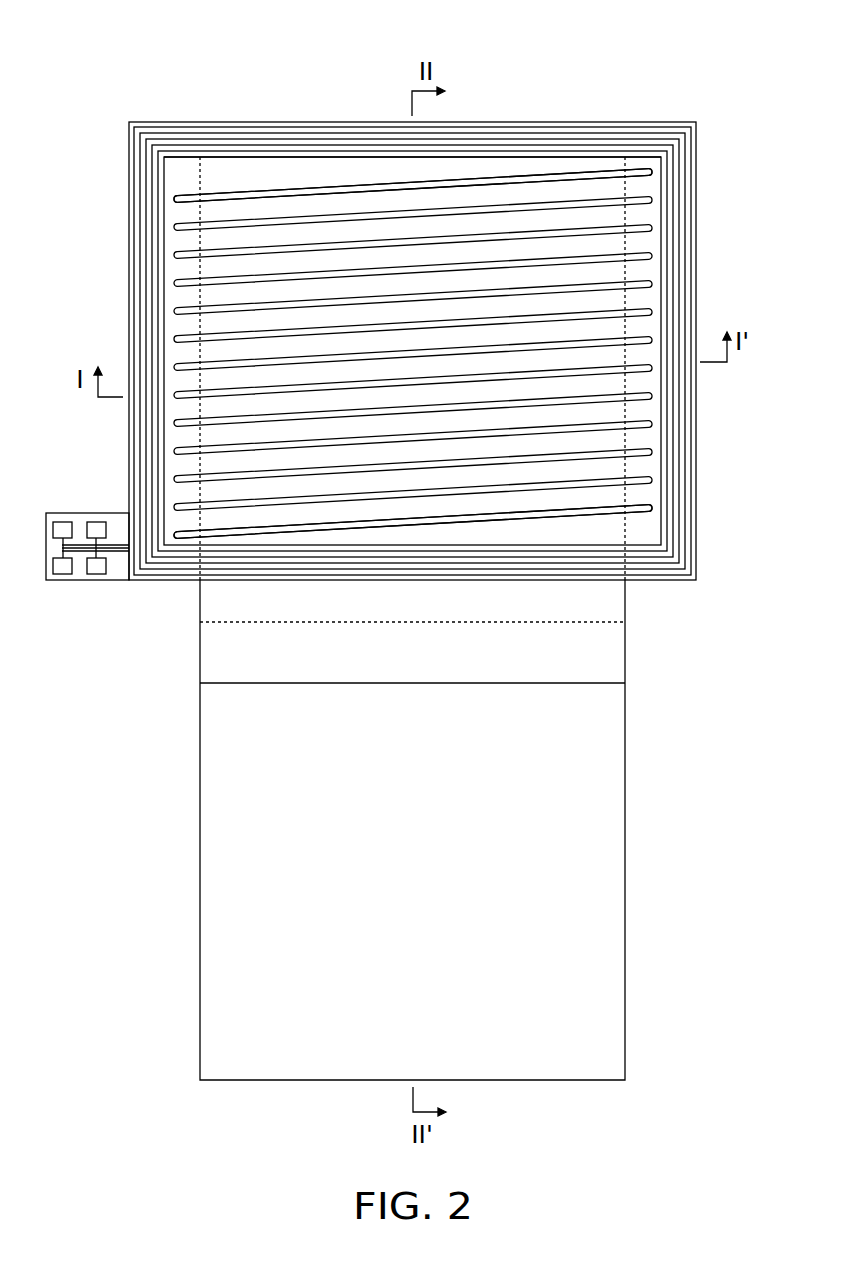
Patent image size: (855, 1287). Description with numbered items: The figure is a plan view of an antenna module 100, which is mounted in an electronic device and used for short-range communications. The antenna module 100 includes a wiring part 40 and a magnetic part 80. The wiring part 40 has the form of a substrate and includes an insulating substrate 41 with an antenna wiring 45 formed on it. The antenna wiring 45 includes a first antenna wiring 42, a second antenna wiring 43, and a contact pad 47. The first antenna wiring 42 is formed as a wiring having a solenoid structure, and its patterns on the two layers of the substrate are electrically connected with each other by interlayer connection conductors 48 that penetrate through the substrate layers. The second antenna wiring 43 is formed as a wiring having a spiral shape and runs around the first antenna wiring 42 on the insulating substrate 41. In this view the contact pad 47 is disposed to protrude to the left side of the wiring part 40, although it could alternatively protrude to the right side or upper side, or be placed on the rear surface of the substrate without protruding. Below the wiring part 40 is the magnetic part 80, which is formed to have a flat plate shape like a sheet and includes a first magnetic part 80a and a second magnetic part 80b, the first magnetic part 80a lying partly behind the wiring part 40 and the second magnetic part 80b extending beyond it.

The antenna module 100 is at (270, 40).
The wiring part 40 is at (687, 118).
The insulating substrate 41 is at (273, 178).
The first antenna wiring 42 is at (549, 176).
The second antenna wiring 43 is at (557, 52).
The antenna wiring 45 is at (412, 110).
The contact pad 47 is at (66, 521).
The interlayer connection conductors 48 is at (648, 508).
The magnetic part 80 is at (484, 830).
The first magnetic part 80a is at (613, 603).
The second magnetic part 80b is at (459, 881).